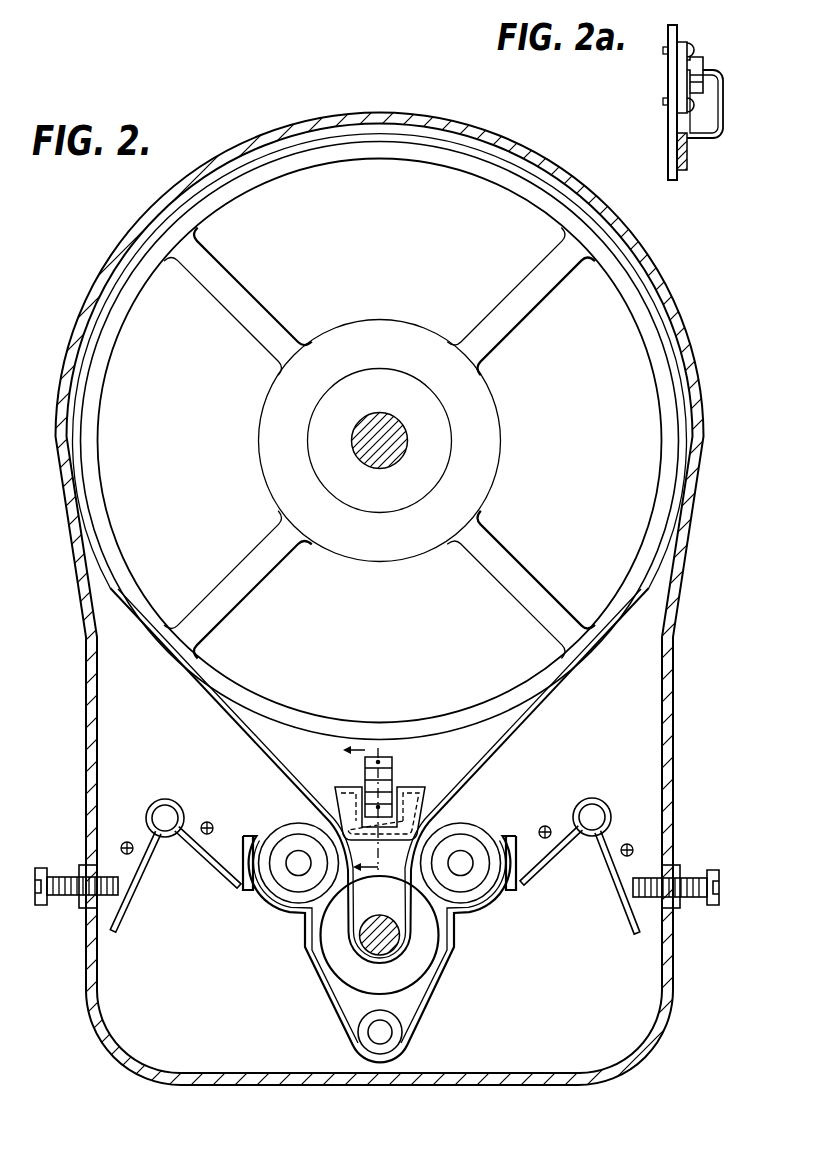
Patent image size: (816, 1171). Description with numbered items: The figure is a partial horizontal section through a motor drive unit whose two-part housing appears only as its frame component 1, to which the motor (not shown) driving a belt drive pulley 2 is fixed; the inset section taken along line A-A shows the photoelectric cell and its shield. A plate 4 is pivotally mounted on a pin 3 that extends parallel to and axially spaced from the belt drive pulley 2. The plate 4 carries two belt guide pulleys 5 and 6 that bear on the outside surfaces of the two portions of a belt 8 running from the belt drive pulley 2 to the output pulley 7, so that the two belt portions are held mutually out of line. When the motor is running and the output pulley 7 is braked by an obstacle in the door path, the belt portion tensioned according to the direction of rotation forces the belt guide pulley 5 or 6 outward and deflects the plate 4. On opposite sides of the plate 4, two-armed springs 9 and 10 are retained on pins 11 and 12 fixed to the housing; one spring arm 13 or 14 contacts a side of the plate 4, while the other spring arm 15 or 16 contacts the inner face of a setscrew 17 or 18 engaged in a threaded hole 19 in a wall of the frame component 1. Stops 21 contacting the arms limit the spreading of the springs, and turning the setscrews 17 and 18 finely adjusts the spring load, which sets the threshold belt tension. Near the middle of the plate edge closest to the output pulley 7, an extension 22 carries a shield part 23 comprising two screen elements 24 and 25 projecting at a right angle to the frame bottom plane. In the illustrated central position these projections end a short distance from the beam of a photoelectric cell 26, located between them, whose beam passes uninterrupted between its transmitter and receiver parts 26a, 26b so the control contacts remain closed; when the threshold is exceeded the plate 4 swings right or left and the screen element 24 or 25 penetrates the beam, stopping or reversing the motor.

In FIG. 2, the frame component 1 is at (657, 722).
In FIG. 2, the belt drive pulley 2 is at (368, 948).
In FIG. 2, the pin 3 is at (372, 1035).
In FIG. 2, the plate 4 is at (447, 947).
In FIG. 2, the belt guide pulley 5 is at (475, 826).
In FIG. 2, the belt guide pulley 6 is at (291, 825).
In FIG. 2, the output pulley 7 is at (595, 632).
In FIG. 2, the belt 8 is at (180, 668).
In FIG. 2, the two-armed spring 9 is at (571, 896).
In FIG. 2, the two-armed spring 10 is at (168, 880).
In FIG. 2, the pin 11 is at (594, 803).
In FIG. 2, the pin 12 is at (165, 800).
In FIG. 2, the spring arm 13 is at (526, 878).
In FIG. 2, the spring arm 14 is at (238, 886).
In FIG. 2, the spring arm 15 is at (630, 913).
In FIG. 2, the spring arm 16 is at (123, 913).
In FIG. 2, the setscrew 17 is at (697, 877).
In FIG. 2, the setscrew 18 is at (64, 877).
In FIG. 2, the threaded hole 19 is at (87, 913).
In FIG. 2, the stop 21 is at (126, 842).
In FIG. 2, the extension 22 is at (452, 768).
In FIG. 2, the shield part 23 is at (350, 808).
In FIG. 2, the screen element 24 is at (400, 786).
In FIG. 2, the screen element 25 is at (345, 788).
In FIG. 2A, the screen element 25 is at (690, 140).
In FIG. 2, the photoelectric cell 26 is at (397, 767).
In FIG. 2A, the photoelectric cell 26 is at (702, 52).
In FIG. 2, the transmitter part 26a is at (396, 853).
In FIG. 2, the receiver part 26b is at (357, 749).